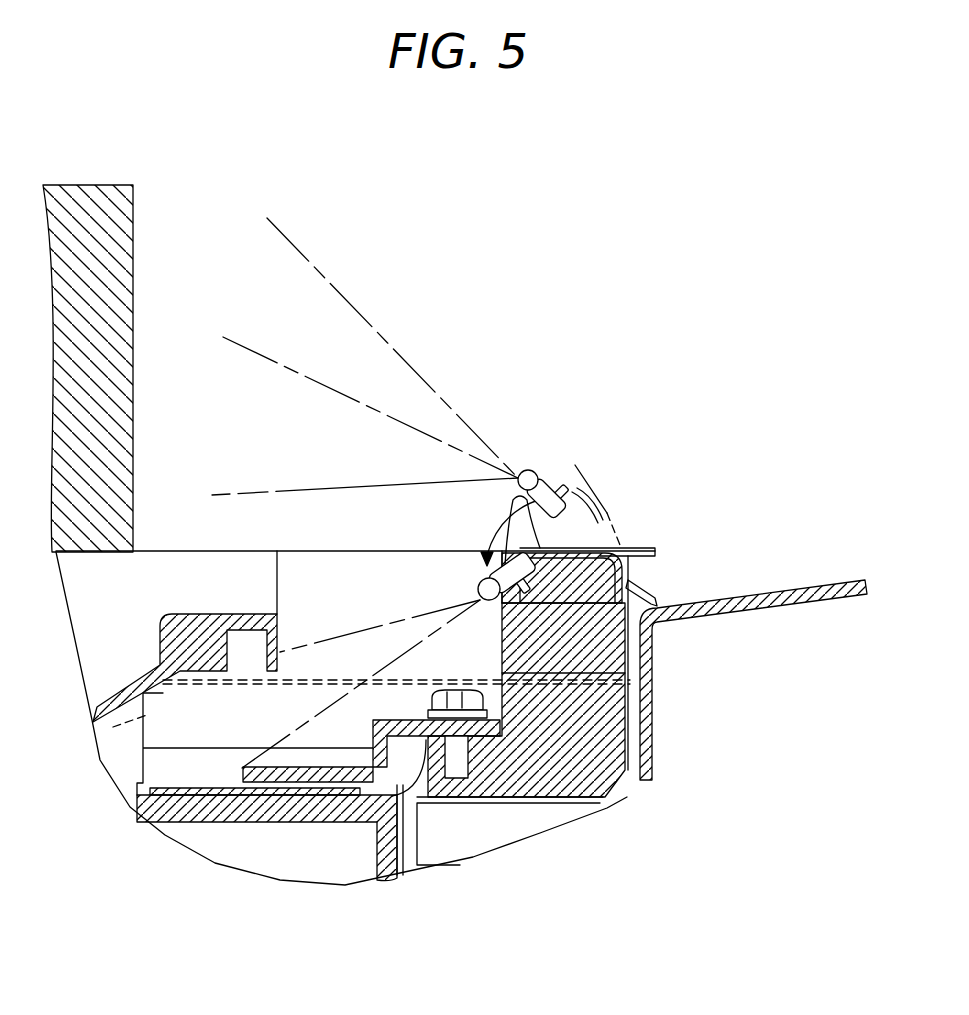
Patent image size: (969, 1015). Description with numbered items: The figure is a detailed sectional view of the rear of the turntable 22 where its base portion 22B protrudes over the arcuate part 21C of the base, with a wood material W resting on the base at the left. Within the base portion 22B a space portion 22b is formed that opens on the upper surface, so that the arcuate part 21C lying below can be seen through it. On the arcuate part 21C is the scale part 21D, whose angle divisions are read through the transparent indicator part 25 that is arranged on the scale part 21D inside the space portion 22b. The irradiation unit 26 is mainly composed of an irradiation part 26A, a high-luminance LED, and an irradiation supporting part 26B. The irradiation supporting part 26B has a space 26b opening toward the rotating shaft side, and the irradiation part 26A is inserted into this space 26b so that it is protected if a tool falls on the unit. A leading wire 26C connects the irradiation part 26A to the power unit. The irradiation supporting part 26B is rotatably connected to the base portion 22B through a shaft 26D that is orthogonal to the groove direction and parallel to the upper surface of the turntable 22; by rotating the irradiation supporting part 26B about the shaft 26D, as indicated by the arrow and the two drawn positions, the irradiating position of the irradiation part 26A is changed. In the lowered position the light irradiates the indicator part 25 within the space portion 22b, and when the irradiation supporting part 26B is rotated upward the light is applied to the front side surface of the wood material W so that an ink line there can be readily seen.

The wood material W is at (118, 250).
The turntable 22 is at (173, 562).
The space portion 22b is at (368, 583).
The base portion 22B is at (575, 733).
The irradiation unit 26 is at (618, 547).
The irradiation part 26A is at (485, 567).
The space 26b is at (545, 466).
The irradiation supporting part 26B is at (637, 548).
The leading wire 26C is at (623, 674).
The shaft 26D is at (633, 582).
The arcuate part 21C is at (243, 812).
The scale part 21D is at (296, 818).
The indicator part 25 is at (356, 822).